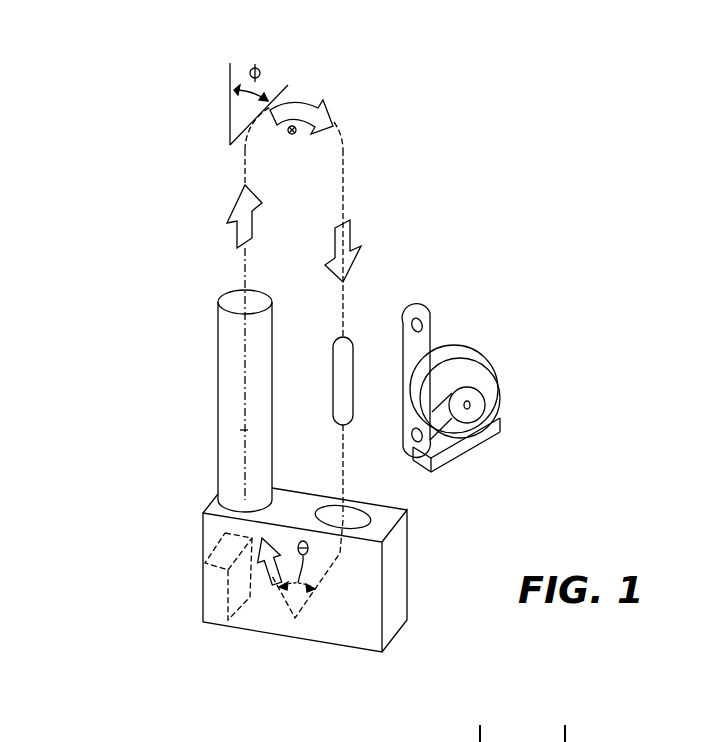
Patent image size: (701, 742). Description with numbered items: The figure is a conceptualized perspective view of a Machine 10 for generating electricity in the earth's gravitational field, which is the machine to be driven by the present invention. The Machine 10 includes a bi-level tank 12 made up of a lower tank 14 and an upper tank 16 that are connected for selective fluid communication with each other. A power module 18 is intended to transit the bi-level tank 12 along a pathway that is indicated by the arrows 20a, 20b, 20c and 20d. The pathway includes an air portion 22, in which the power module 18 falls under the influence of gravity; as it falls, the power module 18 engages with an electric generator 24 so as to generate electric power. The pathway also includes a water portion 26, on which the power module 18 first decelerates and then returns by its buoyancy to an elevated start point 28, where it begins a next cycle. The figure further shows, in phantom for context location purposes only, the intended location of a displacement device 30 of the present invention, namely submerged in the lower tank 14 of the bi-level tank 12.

The Machine 10 is at (100, 248).
The bi-level tank 12 is at (203, 513).
The lower tank 14 is at (398, 607).
The upper tank 16 is at (230, 375).
The power module 18 is at (353, 365).
The arrow 20a is at (305, 110).
The arrow 20b is at (350, 230).
The arrow 20c is at (271, 582).
The arrow 20d is at (237, 235).
The air portion 22 is at (345, 148).
The electric generator 24 is at (490, 378).
The water portion 26 is at (243, 430).
The elevated start point 28 is at (291, 132).
The displacement device 30 is at (215, 593).